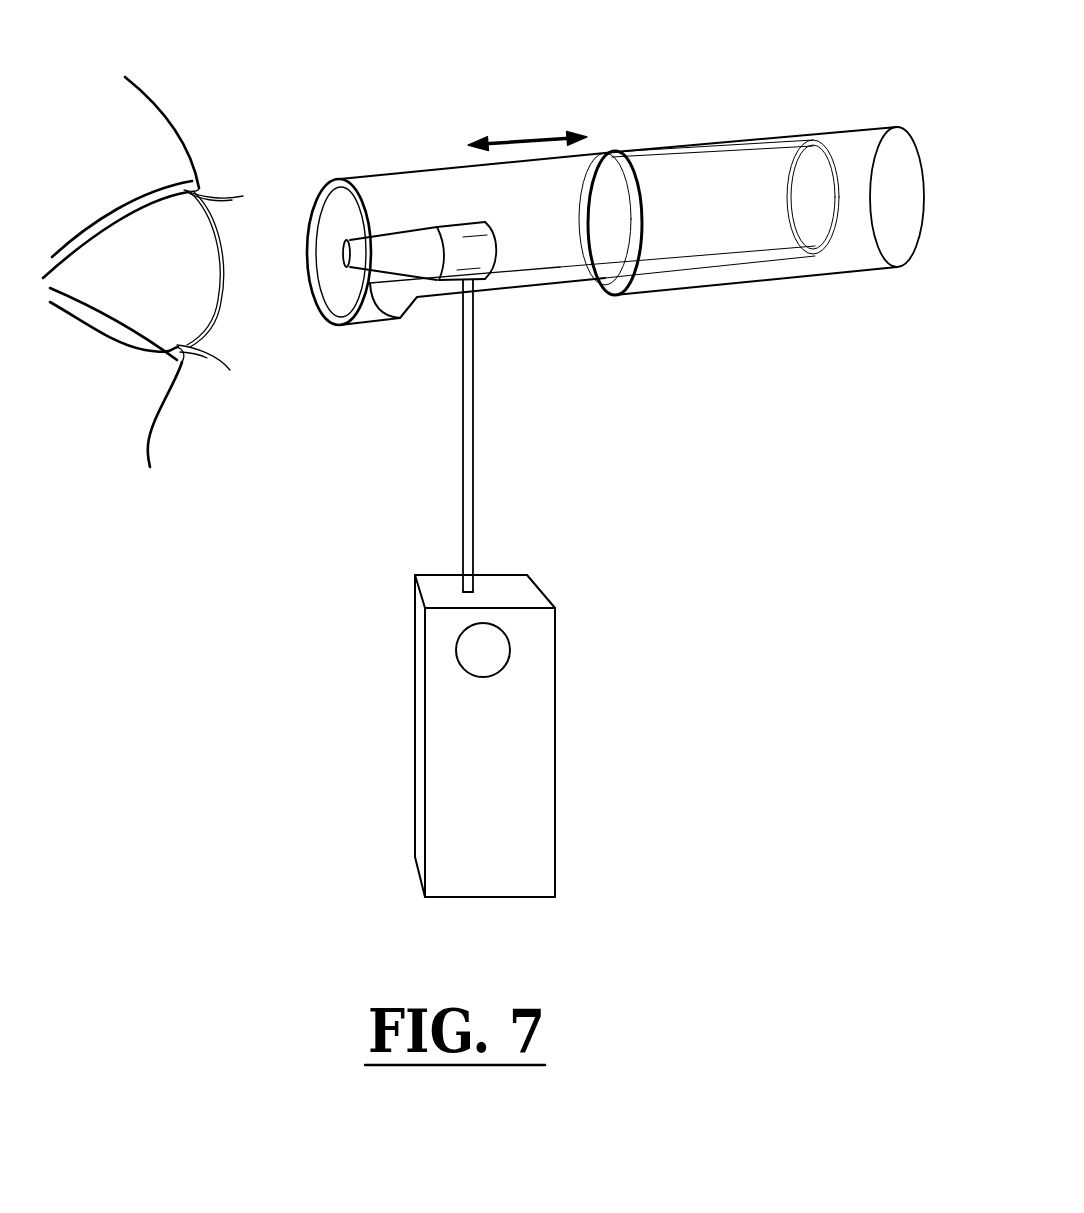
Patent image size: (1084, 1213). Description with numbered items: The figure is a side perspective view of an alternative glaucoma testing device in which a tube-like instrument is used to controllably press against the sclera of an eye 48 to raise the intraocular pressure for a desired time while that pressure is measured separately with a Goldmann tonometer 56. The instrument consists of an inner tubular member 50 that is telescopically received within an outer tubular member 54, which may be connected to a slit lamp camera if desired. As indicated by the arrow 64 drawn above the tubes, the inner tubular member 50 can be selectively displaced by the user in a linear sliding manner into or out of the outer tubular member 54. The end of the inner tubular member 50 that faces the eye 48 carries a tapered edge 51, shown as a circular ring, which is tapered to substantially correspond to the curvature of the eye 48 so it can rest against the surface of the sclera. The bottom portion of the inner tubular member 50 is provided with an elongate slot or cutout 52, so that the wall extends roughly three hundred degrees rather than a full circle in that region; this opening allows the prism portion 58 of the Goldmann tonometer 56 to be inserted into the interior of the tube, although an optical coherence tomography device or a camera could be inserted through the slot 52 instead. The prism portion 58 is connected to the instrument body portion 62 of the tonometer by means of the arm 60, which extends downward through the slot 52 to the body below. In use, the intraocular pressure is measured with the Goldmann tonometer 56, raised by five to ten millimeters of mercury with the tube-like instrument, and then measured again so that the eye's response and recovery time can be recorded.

The eye 48 is at (148, 298).
The inner tubular member 50 is at (452, 206).
The tapered edge 51 is at (316, 231).
The elongate slot or cutout 52 is at (504, 300).
The outer tubular member 54 is at (852, 140).
The Goldmann tonometer 56 is at (599, 460).
The prism portion 58 is at (403, 263).
The arm 60 is at (473, 443).
The instrument body portion 62 is at (525, 775).
The arrow 64 is at (528, 138).